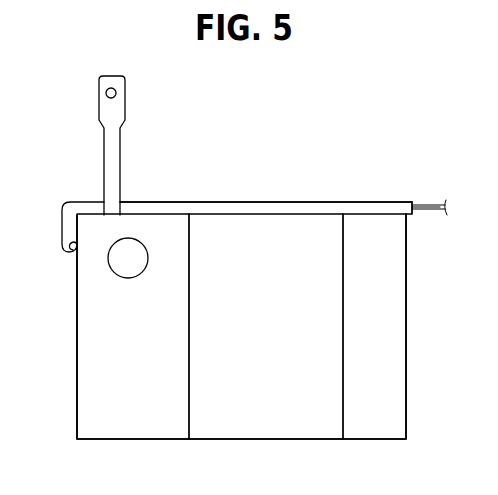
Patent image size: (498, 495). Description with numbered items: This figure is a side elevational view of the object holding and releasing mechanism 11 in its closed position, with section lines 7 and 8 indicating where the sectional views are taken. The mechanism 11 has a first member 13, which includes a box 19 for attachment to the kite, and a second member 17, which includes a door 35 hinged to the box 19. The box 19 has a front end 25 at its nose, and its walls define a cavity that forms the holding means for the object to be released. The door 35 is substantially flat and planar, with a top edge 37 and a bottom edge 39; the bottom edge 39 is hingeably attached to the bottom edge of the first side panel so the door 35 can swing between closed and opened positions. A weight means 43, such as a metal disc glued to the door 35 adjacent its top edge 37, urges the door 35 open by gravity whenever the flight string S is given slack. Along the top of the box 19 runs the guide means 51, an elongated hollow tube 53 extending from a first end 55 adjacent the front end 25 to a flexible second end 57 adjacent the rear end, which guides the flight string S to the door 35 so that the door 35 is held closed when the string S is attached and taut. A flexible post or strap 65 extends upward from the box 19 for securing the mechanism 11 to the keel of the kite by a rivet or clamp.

The object holding and releasing mechanism 11 is at (345, 104).
The first member 13 is at (410, 376).
The second member 17 is at (70, 356).
The box 19 is at (378, 430).
The front end 25 is at (397, 357).
The door 35 is at (98, 412).
The top edge 37 is at (160, 223).
The bottom edge 39 is at (157, 430).
The weight means 43 is at (118, 267).
The guide means 51 is at (242, 190).
The tube 53 is at (295, 203).
The first end 55 is at (392, 205).
The second end 57 is at (69, 203).
The strap 65 is at (117, 113).
The flight string S is at (425, 203).
The section line 7- 7 is at (133, 195).
The section line 8- 8 is at (67, 262).